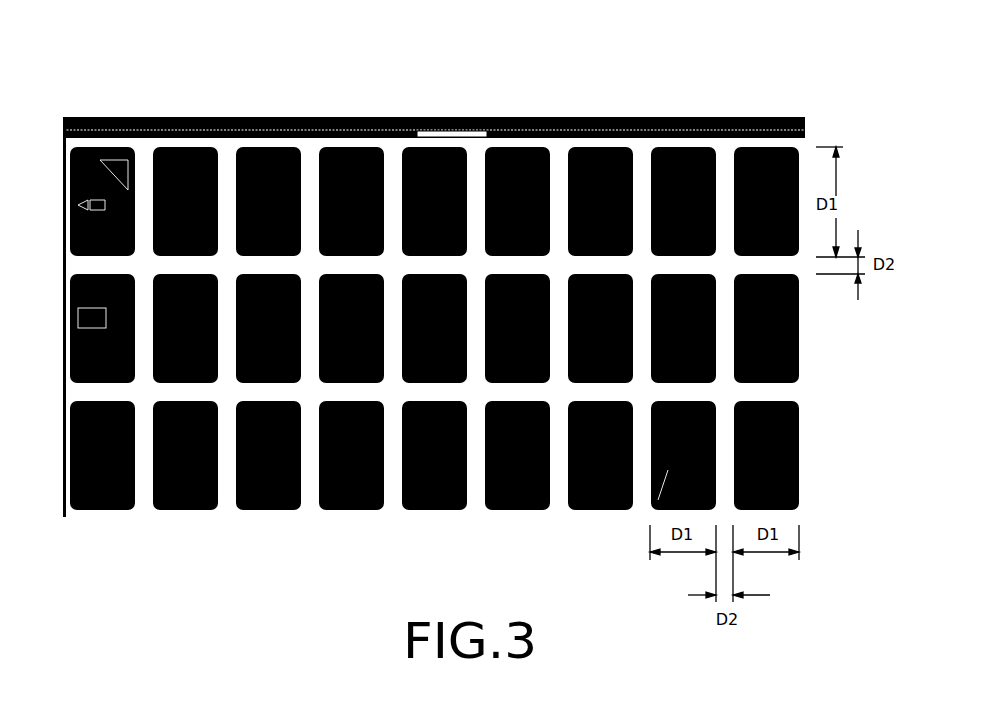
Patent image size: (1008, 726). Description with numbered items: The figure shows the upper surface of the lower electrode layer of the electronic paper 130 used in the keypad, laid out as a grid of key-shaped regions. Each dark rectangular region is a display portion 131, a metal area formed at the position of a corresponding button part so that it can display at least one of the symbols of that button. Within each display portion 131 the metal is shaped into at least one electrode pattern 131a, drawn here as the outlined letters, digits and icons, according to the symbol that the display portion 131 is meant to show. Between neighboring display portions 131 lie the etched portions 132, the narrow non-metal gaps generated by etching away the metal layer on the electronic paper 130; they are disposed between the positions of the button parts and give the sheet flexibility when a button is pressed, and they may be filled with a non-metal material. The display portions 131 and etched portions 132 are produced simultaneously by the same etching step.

The electronic paper 130 is at (450, 24).
The display portion 131 is at (593, 147).
The electrode pattern 131a is at (249, 147).
The etched portion 132 is at (722, 162).